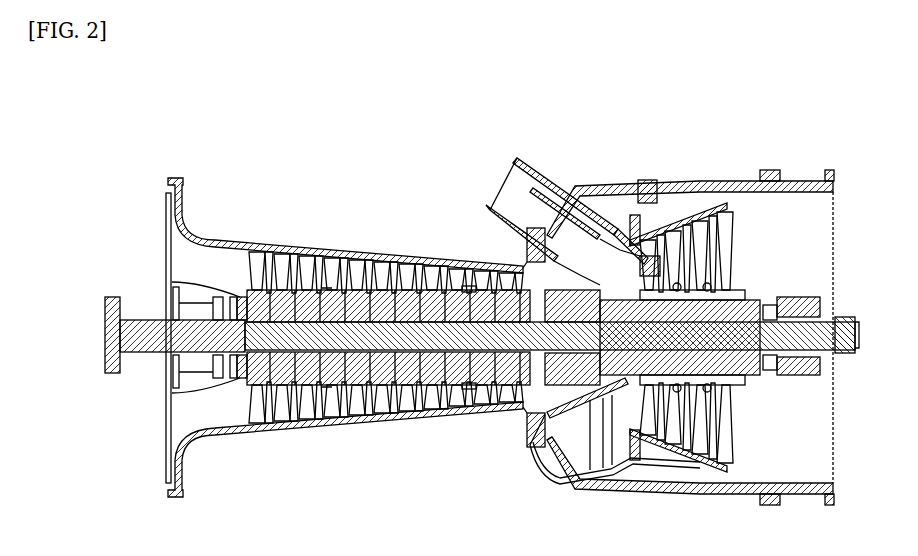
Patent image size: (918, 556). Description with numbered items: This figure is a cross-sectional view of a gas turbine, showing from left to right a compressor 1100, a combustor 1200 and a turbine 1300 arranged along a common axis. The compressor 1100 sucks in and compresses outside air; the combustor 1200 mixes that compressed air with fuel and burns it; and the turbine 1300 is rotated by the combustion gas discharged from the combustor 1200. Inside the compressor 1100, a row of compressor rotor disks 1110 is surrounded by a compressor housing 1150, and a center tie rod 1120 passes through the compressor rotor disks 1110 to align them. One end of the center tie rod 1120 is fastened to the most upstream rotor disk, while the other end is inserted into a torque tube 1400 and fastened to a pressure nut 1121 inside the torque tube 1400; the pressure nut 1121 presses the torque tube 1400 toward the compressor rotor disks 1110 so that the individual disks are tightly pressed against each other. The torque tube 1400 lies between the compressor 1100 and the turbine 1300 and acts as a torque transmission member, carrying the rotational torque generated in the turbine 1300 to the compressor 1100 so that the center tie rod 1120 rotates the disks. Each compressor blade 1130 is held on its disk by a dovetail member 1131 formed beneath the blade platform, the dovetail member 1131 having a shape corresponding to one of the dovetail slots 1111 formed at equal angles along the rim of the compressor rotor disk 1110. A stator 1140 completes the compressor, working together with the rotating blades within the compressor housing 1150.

The compressor 1100 is at (228, 392).
The compressor rotor disk 1110 is at (285, 300).
The dovetail slot 1111 is at (268, 272).
The center tie rod 1120 is at (305, 258).
The pressure nut 1121 is at (468, 258).
The compressor blade 1130 is at (168, 388).
The dovetail member 1131 is at (325, 260).
The stator 1140 is at (275, 278).
The compressor housing 1150 is at (387, 237).
The combustor 1200 is at (520, 162).
The turbine 1300 is at (628, 392).
The torque tube 1400 is at (588, 445).